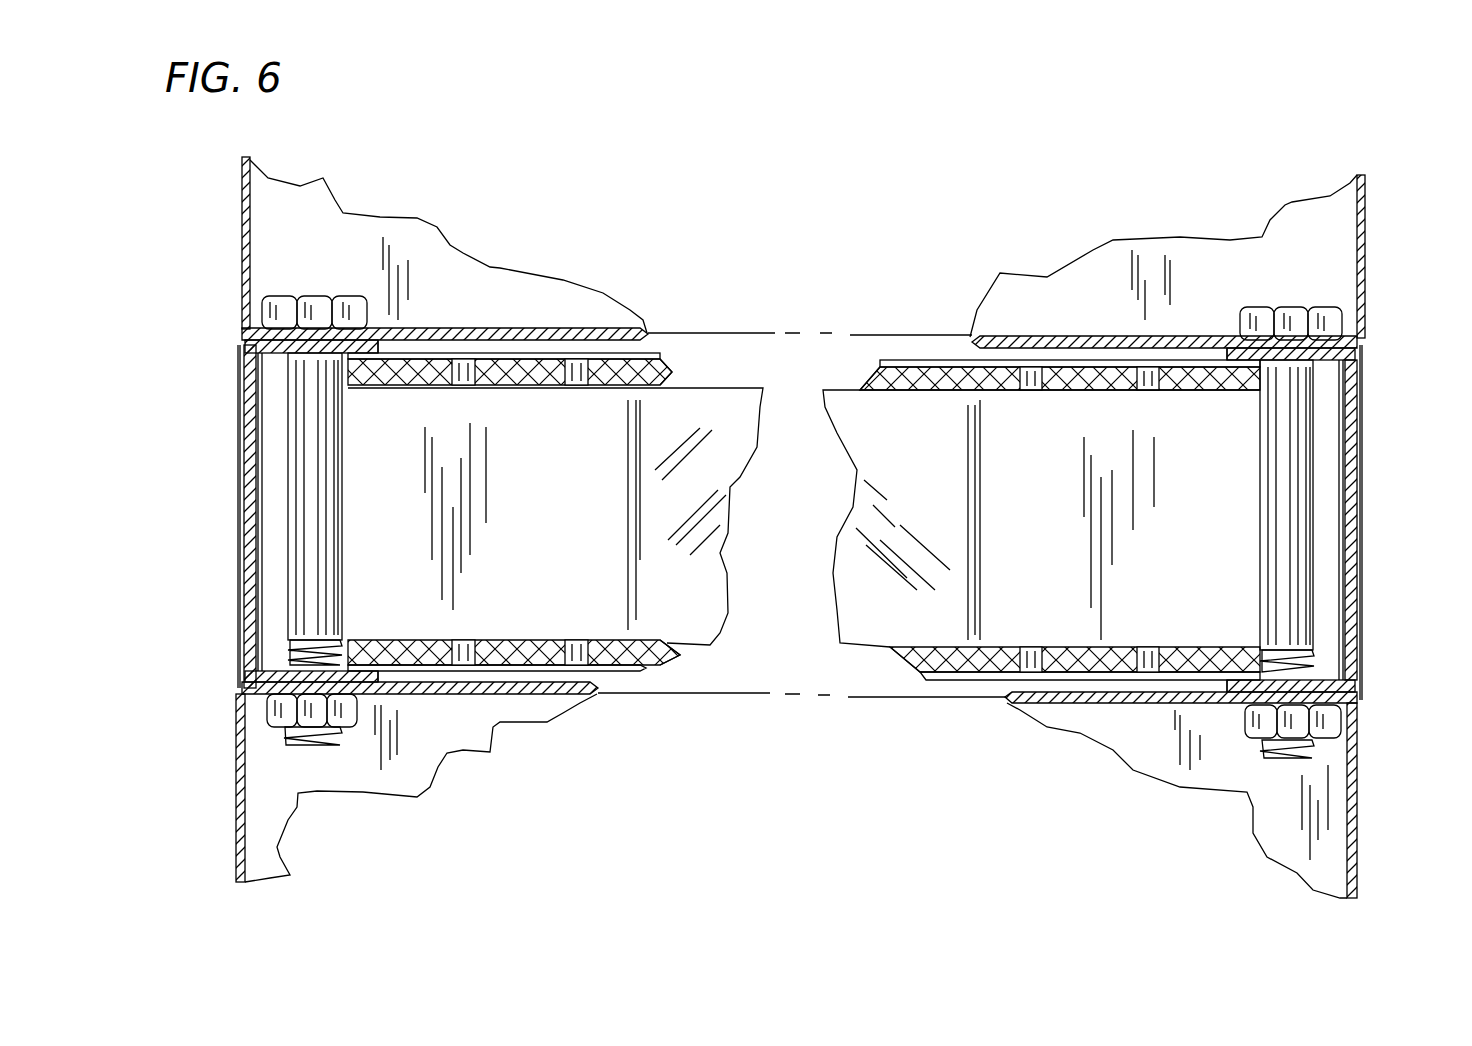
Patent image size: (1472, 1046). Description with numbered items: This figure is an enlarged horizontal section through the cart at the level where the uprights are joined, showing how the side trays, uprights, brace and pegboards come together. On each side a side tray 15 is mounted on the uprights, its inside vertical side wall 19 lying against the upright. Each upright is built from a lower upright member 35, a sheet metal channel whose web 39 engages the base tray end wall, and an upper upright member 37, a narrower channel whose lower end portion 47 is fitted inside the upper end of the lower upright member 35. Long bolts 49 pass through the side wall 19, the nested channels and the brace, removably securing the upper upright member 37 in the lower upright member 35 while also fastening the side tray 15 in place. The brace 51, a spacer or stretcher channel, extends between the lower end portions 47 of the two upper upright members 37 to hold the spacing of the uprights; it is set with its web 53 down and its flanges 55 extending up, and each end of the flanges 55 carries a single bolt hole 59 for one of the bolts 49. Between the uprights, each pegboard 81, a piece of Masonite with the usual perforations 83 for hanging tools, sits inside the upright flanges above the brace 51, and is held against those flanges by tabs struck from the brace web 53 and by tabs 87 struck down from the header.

The side tray 15 is at (240, 213).
The inside vertical side wall 19 is at (580, 333).
The lower upright member 35 is at (240, 407).
The upper upright member 37 is at (240, 493).
The web 39 is at (238, 532).
The lower end portion 47 is at (248, 605).
The bolts 49 is at (348, 295).
The brace 51 is at (482, 678).
The web 53 is at (547, 603).
The flanges 55 is at (517, 353).
The bolt hole 59 is at (345, 445).
The pegboard 81 is at (660, 660).
The perforations 83 is at (578, 645).
The tabs 87 is at (757, 477).